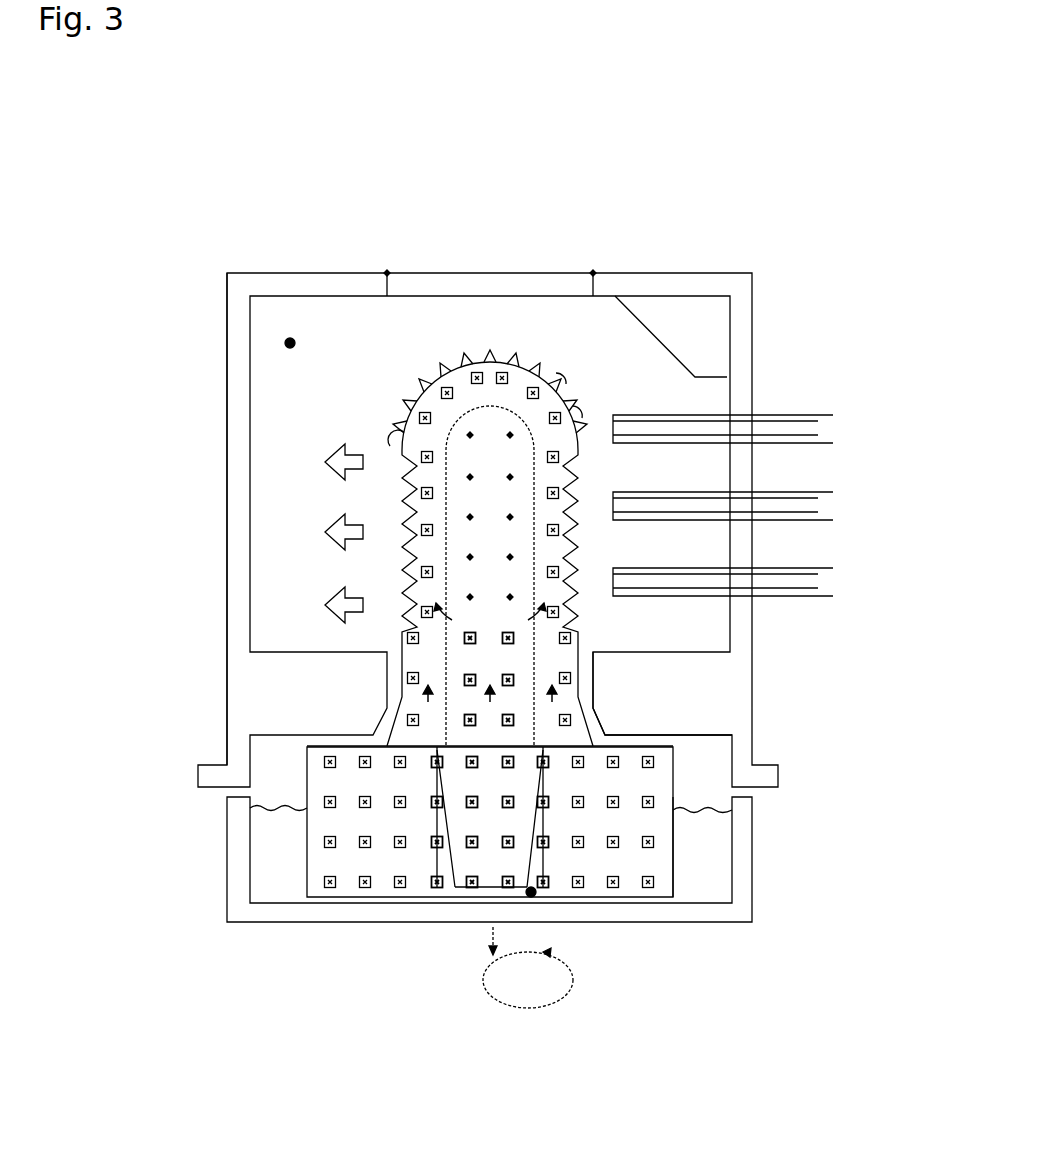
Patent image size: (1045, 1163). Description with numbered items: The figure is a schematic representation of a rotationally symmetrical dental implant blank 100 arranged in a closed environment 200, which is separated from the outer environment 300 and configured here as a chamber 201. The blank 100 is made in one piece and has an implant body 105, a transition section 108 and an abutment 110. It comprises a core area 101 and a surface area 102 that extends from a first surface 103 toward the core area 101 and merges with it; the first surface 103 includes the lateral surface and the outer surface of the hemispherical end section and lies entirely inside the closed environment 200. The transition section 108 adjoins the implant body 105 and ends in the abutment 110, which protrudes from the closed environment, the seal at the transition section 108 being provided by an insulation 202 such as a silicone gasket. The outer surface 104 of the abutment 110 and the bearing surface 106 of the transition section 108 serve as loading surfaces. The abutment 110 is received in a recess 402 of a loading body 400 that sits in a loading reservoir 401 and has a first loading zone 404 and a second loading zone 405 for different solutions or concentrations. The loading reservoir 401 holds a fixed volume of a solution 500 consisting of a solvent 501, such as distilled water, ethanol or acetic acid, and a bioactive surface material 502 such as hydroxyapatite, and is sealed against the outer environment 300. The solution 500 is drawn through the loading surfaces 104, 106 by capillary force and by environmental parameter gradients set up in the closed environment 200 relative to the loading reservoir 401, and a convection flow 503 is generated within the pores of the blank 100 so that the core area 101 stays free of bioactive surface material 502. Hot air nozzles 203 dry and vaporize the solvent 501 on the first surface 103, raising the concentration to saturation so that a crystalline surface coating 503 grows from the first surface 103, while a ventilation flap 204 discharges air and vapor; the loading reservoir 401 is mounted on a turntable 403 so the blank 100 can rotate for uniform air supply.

The outer environment 300 is at (511, 160).
The dental implant blank 100 is at (565, 330).
The core area 101 is at (465, 495).
The surface area 102 is at (427, 548).
The first surface 103 is at (435, 378).
The outer surface 104 is at (450, 850).
The implant body 105 is at (410, 437).
The bearing surface 106 is at (563, 742).
The transition section 108 is at (405, 672).
The abutment 110 is at (440, 782).
The closed environment 200 is at (290, 343).
The chamber 201 is at (227, 350).
The insulation 202 is at (597, 706).
The air nozzles 203 is at (822, 567).
The ventilation flap 204 is at (425, 273).
The loading body 400 is at (327, 897).
The loading reservoir 401 is at (229, 921).
The recess 402 is at (532, 893).
The turntable 403 is at (515, 1007).
The first loading zone 404 is at (392, 868).
The second loading zone 405 is at (455, 887).
The solution 500 is at (718, 872).
The solvent 501 is at (650, 880).
The bioactive surface material 502 is at (615, 882).
The crystalline surface coating 503 is at (508, 360).